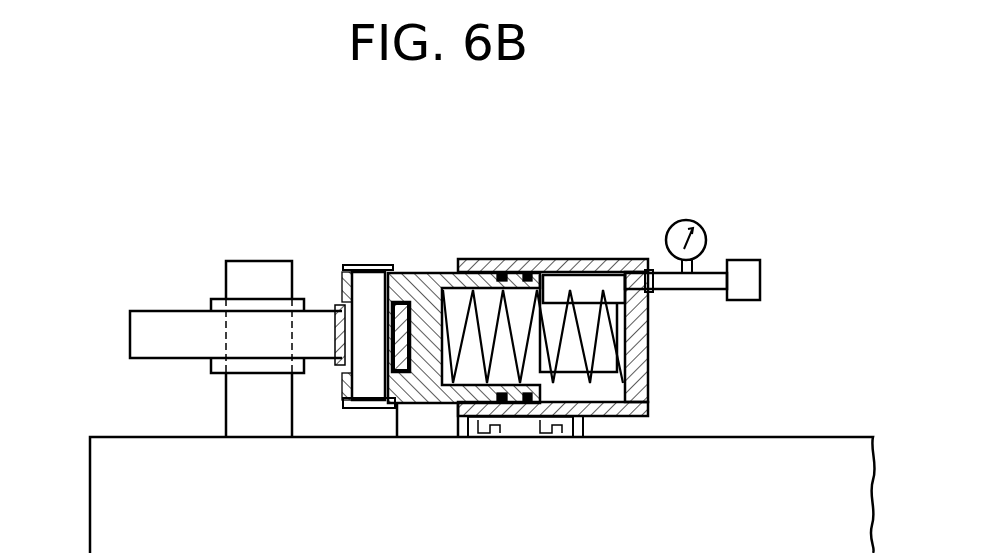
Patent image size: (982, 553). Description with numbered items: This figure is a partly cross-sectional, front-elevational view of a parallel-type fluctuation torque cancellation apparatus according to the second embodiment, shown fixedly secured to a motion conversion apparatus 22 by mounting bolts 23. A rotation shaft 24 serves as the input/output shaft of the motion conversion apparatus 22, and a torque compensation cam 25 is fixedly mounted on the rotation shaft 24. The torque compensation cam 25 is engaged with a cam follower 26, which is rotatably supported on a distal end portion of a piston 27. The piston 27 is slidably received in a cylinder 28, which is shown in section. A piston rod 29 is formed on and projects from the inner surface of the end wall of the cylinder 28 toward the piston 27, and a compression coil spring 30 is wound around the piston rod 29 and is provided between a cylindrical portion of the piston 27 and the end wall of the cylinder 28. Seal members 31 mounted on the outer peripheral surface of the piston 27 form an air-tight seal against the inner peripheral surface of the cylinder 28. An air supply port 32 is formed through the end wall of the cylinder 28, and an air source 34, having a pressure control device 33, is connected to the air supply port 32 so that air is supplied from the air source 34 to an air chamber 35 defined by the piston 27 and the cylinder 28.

The motion conversion apparatus 22 is at (643, 526).
The mounting bolts 23 is at (478, 422).
The rotation shaft 24 is at (247, 272).
The torque compensation cam 25 is at (147, 320).
The cam follower 26 is at (330, 290).
The piston 27 is at (425, 278).
The cylinder 28 is at (490, 268).
The piston rod 29 is at (563, 280).
The compression coil spring 30 is at (627, 340).
The seal members 31 is at (530, 277).
The air supply port 32 is at (635, 277).
The pressure control device 33 is at (700, 226).
The air source 34 is at (752, 283).
The air chamber 35 is at (612, 393).